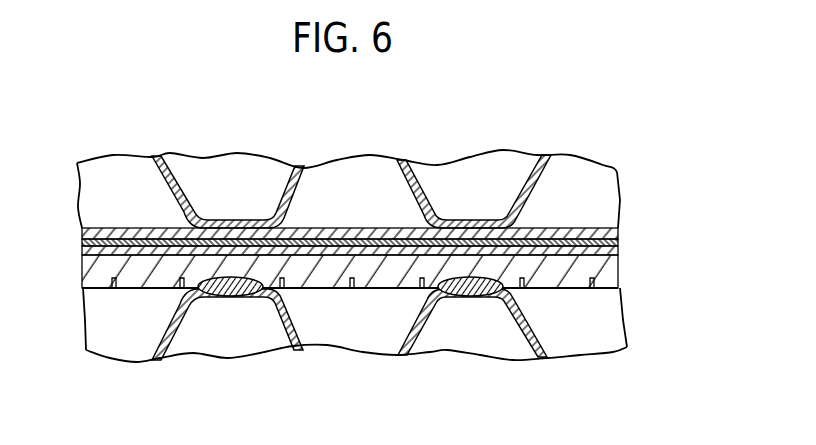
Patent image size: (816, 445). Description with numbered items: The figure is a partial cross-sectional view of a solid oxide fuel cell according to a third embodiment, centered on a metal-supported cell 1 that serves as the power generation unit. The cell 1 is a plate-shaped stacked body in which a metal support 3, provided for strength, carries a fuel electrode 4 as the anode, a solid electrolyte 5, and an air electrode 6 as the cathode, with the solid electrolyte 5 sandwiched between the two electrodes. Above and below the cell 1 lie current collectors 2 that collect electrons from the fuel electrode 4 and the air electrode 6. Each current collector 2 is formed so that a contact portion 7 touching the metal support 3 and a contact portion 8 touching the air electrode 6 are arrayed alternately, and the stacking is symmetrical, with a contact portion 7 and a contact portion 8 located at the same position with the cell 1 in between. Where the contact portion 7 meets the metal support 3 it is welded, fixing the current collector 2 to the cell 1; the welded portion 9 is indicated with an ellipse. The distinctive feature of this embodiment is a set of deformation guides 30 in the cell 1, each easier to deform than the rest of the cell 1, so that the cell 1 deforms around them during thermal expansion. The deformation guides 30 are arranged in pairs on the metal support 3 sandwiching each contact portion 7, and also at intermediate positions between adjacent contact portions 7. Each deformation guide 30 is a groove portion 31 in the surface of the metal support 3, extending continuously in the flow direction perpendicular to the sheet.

The cell 1 is at (398, 245).
The current collector 2 is at (153, 202).
The metal support 3 is at (382, 278).
The fuel electrode 4 is at (618, 250).
The solid electrolyte 5 is at (618, 242).
The air electrode 6 is at (618, 230).
The contact portion 7 is at (199, 298).
The contact portion 8 is at (236, 220).
The welded portion 9 is at (238, 297).
The deformation guide 30 is at (373, 310).
The groove portion 31 is at (170, 290).